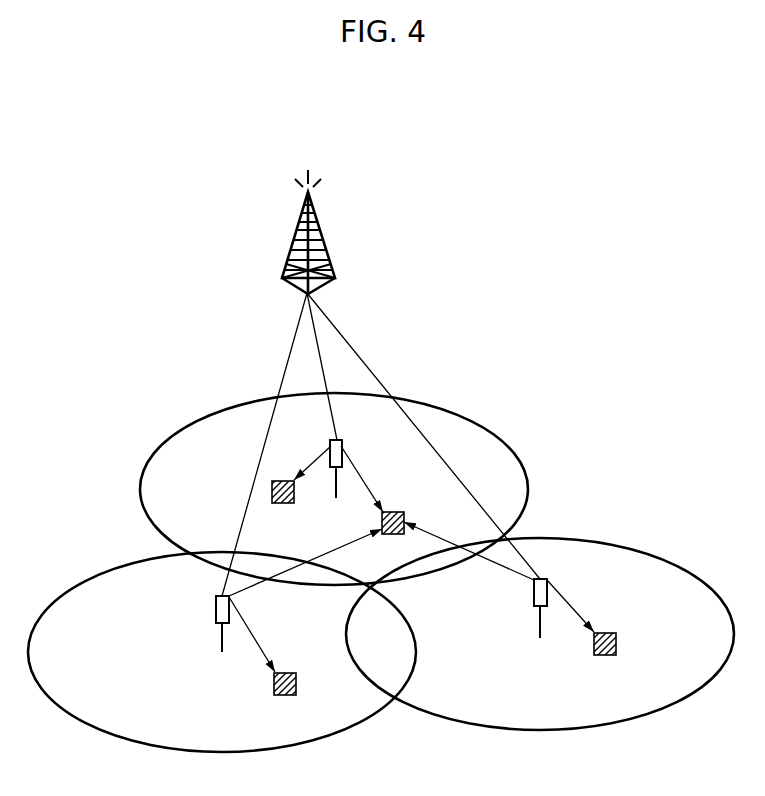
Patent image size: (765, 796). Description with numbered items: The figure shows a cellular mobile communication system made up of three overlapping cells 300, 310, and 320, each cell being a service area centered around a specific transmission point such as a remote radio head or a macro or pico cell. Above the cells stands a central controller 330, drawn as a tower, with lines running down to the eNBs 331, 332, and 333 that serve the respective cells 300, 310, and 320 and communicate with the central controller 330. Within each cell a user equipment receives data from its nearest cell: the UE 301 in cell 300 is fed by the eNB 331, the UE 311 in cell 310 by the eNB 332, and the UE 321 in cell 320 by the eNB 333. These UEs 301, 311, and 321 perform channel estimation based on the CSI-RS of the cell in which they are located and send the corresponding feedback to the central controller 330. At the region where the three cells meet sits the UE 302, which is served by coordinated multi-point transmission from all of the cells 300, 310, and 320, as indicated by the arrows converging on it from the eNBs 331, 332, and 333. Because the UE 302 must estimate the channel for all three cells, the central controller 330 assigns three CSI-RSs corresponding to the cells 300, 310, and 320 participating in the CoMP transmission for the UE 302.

The cell 300 is at (437, 404).
The cell 310 is at (128, 562).
The cell 320 is at (581, 535).
The central controller 330 is at (324, 231).
The eNB 331 is at (342, 438).
The eNB 332 is at (216, 609).
The eNB 333 is at (534, 592).
The UE 301 is at (285, 504).
The UE 302 is at (389, 512).
The UE 311 is at (292, 672).
The UE 321 is at (612, 632).